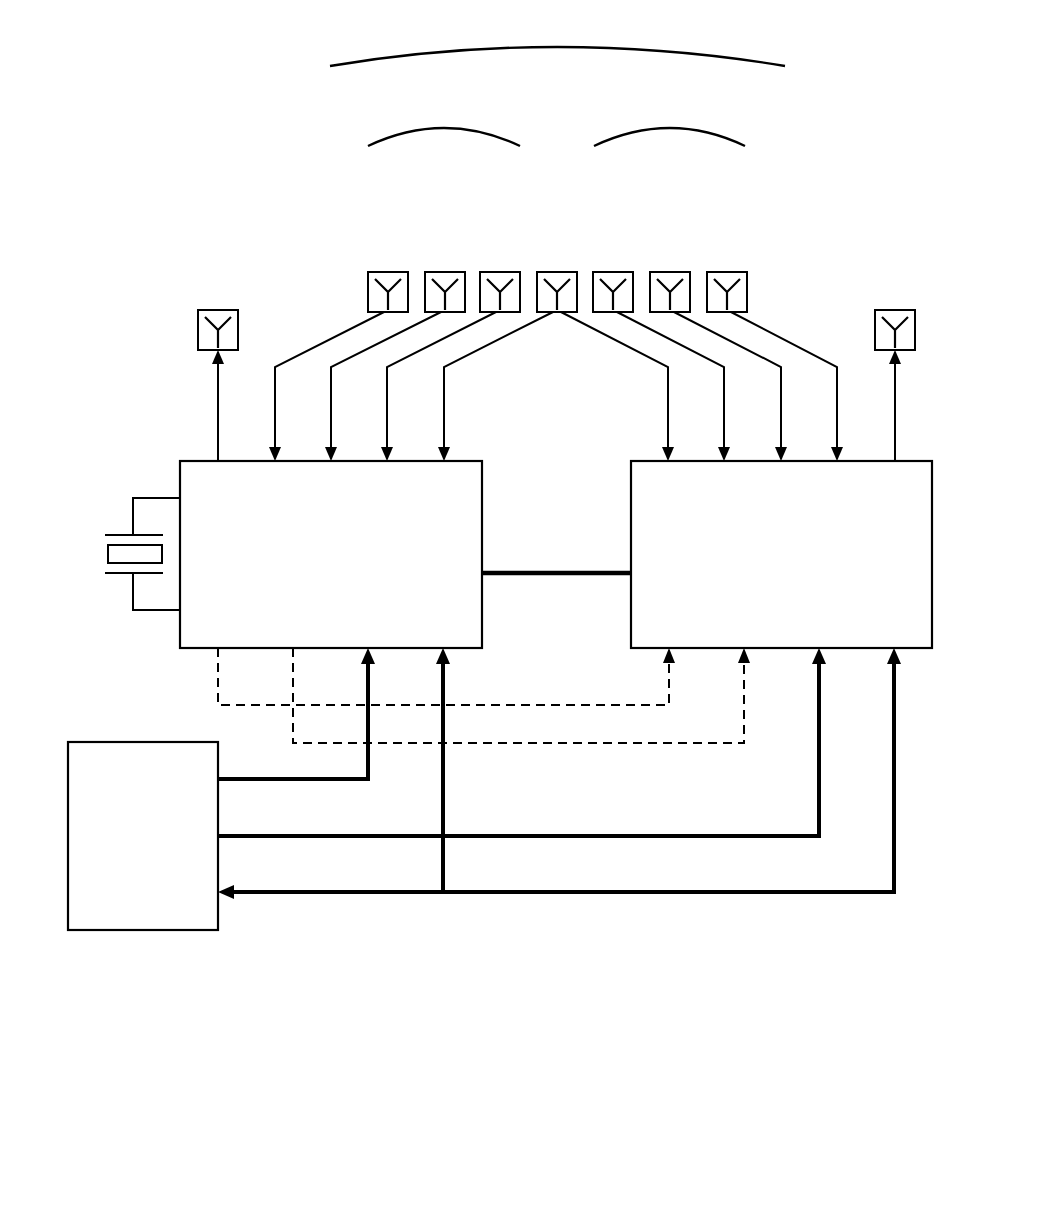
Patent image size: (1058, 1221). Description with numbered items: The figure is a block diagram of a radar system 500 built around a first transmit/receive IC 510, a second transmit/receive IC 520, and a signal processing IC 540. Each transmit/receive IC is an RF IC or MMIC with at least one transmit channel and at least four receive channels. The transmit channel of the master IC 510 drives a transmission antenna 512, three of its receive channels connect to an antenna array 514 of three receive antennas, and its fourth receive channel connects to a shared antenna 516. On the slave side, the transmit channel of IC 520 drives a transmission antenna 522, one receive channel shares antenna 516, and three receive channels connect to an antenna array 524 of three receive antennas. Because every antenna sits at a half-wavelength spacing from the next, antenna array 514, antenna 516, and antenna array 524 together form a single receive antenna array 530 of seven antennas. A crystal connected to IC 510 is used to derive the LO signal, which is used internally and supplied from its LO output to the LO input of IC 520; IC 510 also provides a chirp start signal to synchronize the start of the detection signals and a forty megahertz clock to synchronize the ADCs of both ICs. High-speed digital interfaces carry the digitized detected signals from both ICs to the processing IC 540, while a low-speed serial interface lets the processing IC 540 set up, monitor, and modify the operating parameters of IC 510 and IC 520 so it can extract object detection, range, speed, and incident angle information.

The radar system 500 is at (87, 999).
The first transmit/receive IC 510 is at (193, 460).
The transmission antenna 512 is at (213, 246).
The antenna array 514 is at (451, 129).
The antenna 516 is at (553, 158).
The second transmit/receive IC 520 is at (920, 460).
The transmission antenna 522 is at (897, 246).
The antenna array 524 is at (660, 129).
The single receive antenna array 530 is at (568, 47).
The signal processing IC 540 is at (80, 742).